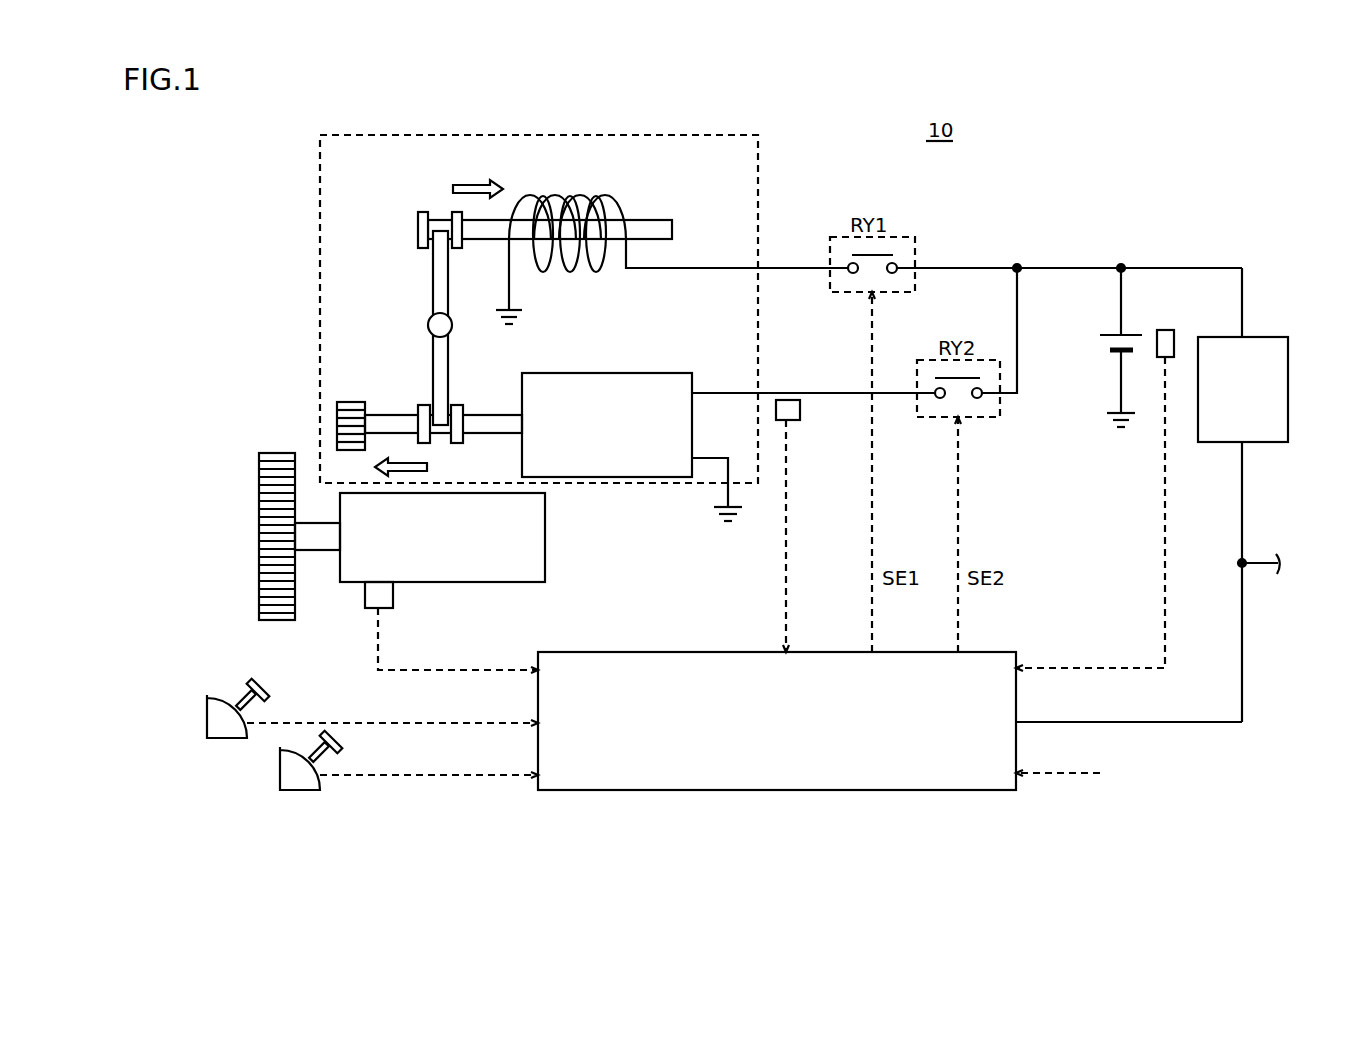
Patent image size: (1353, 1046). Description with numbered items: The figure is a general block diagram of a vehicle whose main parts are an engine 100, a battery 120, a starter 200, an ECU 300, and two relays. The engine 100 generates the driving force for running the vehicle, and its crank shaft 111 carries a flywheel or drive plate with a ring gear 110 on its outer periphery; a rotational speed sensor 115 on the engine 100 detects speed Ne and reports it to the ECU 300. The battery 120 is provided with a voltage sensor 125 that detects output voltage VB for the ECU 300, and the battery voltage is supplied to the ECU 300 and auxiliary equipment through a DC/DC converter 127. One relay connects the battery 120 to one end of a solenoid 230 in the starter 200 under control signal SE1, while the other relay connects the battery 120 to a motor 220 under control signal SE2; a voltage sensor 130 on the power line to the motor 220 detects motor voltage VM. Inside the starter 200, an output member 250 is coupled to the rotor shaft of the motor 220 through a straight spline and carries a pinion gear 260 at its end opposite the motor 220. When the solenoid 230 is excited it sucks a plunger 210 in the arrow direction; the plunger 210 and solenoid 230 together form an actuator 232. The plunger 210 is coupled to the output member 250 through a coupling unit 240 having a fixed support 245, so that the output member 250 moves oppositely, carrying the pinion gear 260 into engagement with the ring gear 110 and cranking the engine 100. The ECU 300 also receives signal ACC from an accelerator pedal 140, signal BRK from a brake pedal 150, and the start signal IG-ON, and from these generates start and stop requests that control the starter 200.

The engine 100 is at (517, 582).
The ring gear 110 is at (295, 607).
The crank shaft 111 is at (318, 550).
The rotational speed sensor 115 is at (393, 597).
The battery 120 is at (1137, 332).
The voltage sensor 125 is at (1172, 328).
The DC/DC converter 127 is at (1270, 337).
The voltage sensor 130 is at (800, 410).
The accelerator pedal 140 is at (207, 728).
The brake pedal 150 is at (280, 782).
The starter 200 is at (692, 133).
The plunger 210 is at (657, 220).
The motor 220 is at (623, 372).
The solenoid 230 is at (583, 192).
The actuator 232 is at (586, 285).
The coupling unit 240 is at (433, 283).
The support 245 is at (451, 331).
The output member 250 is at (398, 414).
The pinion gear 260 is at (350, 400).
The ECU 300 is at (947, 790).